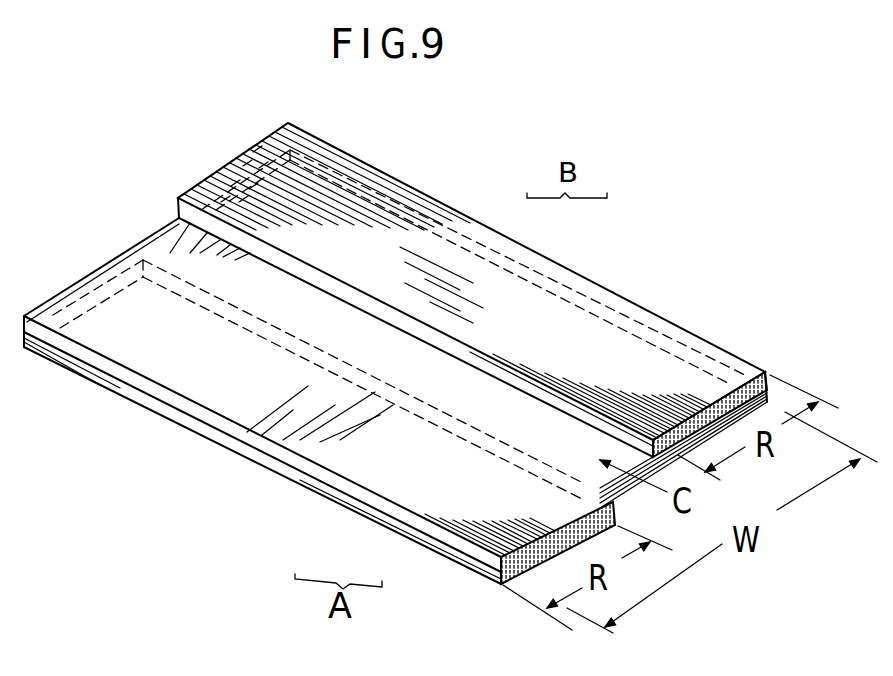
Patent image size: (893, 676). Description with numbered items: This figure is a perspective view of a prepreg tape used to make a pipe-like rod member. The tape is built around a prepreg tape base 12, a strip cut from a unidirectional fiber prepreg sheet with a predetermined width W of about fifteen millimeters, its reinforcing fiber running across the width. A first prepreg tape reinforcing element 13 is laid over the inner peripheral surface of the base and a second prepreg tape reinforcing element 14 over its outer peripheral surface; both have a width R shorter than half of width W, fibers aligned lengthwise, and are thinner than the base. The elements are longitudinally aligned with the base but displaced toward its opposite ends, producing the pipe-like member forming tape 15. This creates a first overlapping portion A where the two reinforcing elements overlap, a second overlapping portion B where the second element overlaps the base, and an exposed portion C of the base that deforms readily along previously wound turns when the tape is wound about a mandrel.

The prepreg tape base 12 is at (483, 405).
The first prepreg tape reinforcing element 13 is at (437, 552).
The second prepreg tape reinforcing element 14 is at (587, 279).
The pipe-like member forming tape 15 is at (682, 248).